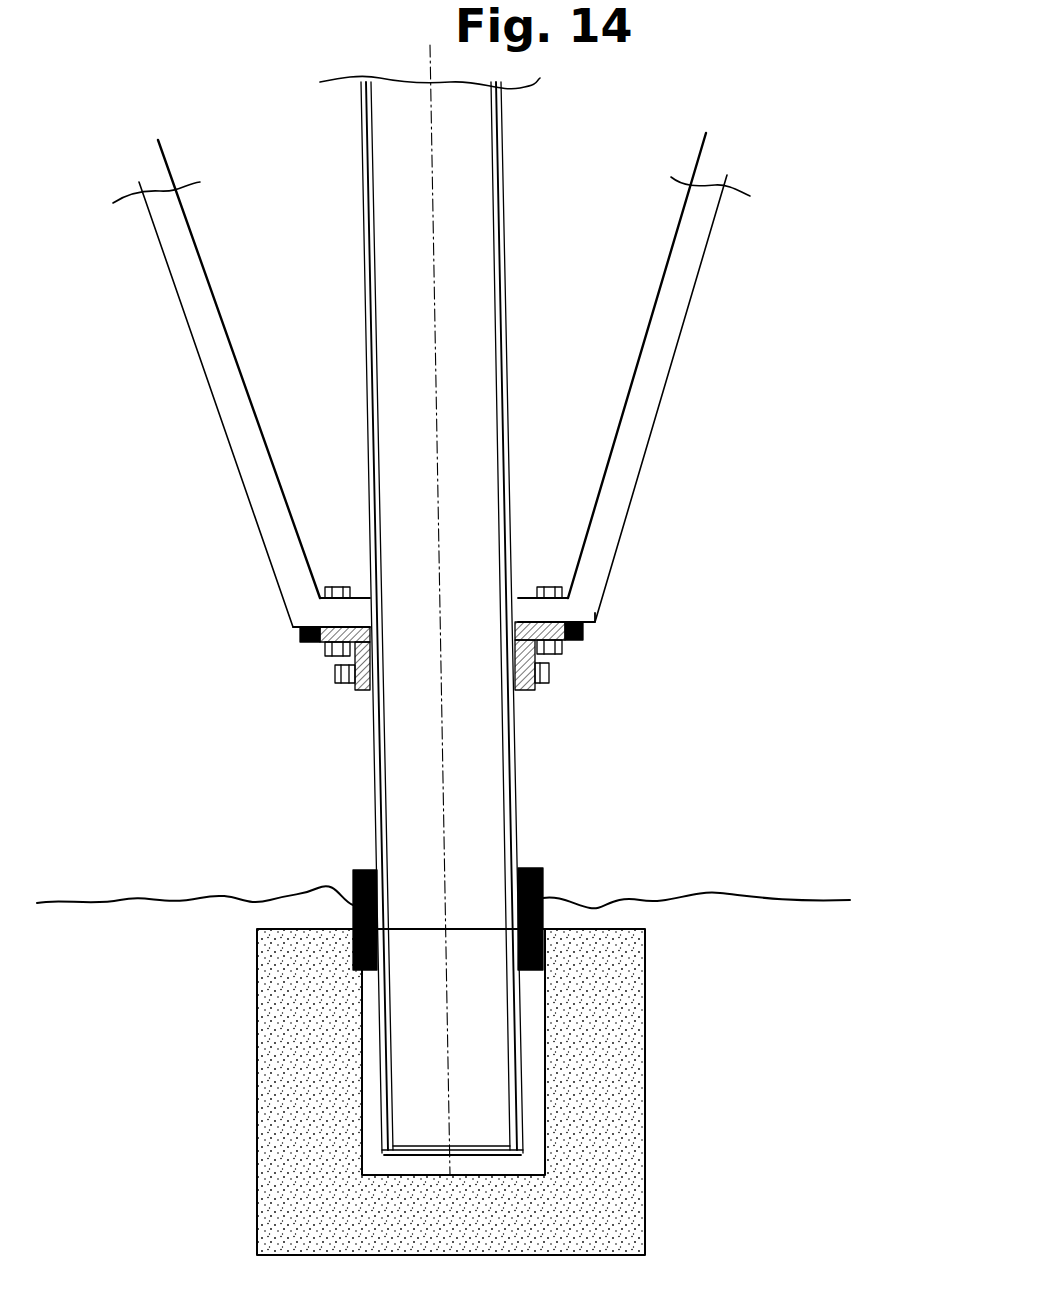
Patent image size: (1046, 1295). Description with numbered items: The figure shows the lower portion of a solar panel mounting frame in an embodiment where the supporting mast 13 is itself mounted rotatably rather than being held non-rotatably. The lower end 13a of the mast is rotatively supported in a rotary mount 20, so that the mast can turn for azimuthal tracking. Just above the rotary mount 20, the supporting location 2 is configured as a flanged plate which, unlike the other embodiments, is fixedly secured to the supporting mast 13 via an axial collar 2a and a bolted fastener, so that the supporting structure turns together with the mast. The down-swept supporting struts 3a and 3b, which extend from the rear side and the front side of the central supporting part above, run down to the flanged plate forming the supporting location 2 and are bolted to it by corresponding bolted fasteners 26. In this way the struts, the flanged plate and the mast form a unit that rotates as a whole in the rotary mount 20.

The supporting mast 13 is at (460, 247).
The lower end of the mast 13a is at (410, 987).
The rear supporting strut 3a is at (210, 355).
The front supporting strut 3b is at (653, 370).
The supporting location 2 is at (600, 647).
The axial collar 2a is at (330, 702).
The bolted fasteners 26 is at (334, 583).
The rotary mount 20 is at (547, 882).